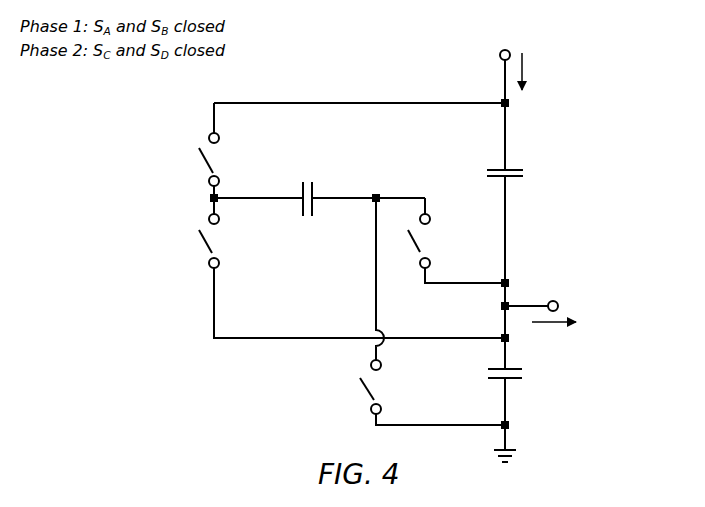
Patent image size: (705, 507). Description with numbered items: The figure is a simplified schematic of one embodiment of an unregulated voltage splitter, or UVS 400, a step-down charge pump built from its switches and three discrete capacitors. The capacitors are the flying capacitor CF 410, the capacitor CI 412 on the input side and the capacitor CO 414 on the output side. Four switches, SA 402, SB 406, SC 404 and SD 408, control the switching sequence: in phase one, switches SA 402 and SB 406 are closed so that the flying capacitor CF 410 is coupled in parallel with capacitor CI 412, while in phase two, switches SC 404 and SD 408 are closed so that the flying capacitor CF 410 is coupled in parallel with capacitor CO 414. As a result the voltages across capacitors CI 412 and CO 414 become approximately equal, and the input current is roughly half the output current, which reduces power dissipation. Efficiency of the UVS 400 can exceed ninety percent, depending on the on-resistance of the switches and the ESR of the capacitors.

The UVS 400 is at (614, 65).
The switch SA 402 is at (213, 165).
The switch SC 404 is at (213, 243).
The switch SB 406 is at (420, 242).
The switch SD 408 is at (370, 390).
The flying capacitor CF 410 is at (313, 185).
The capacitor CI 412 is at (497, 167).
The capacitor CO 414 is at (512, 380).